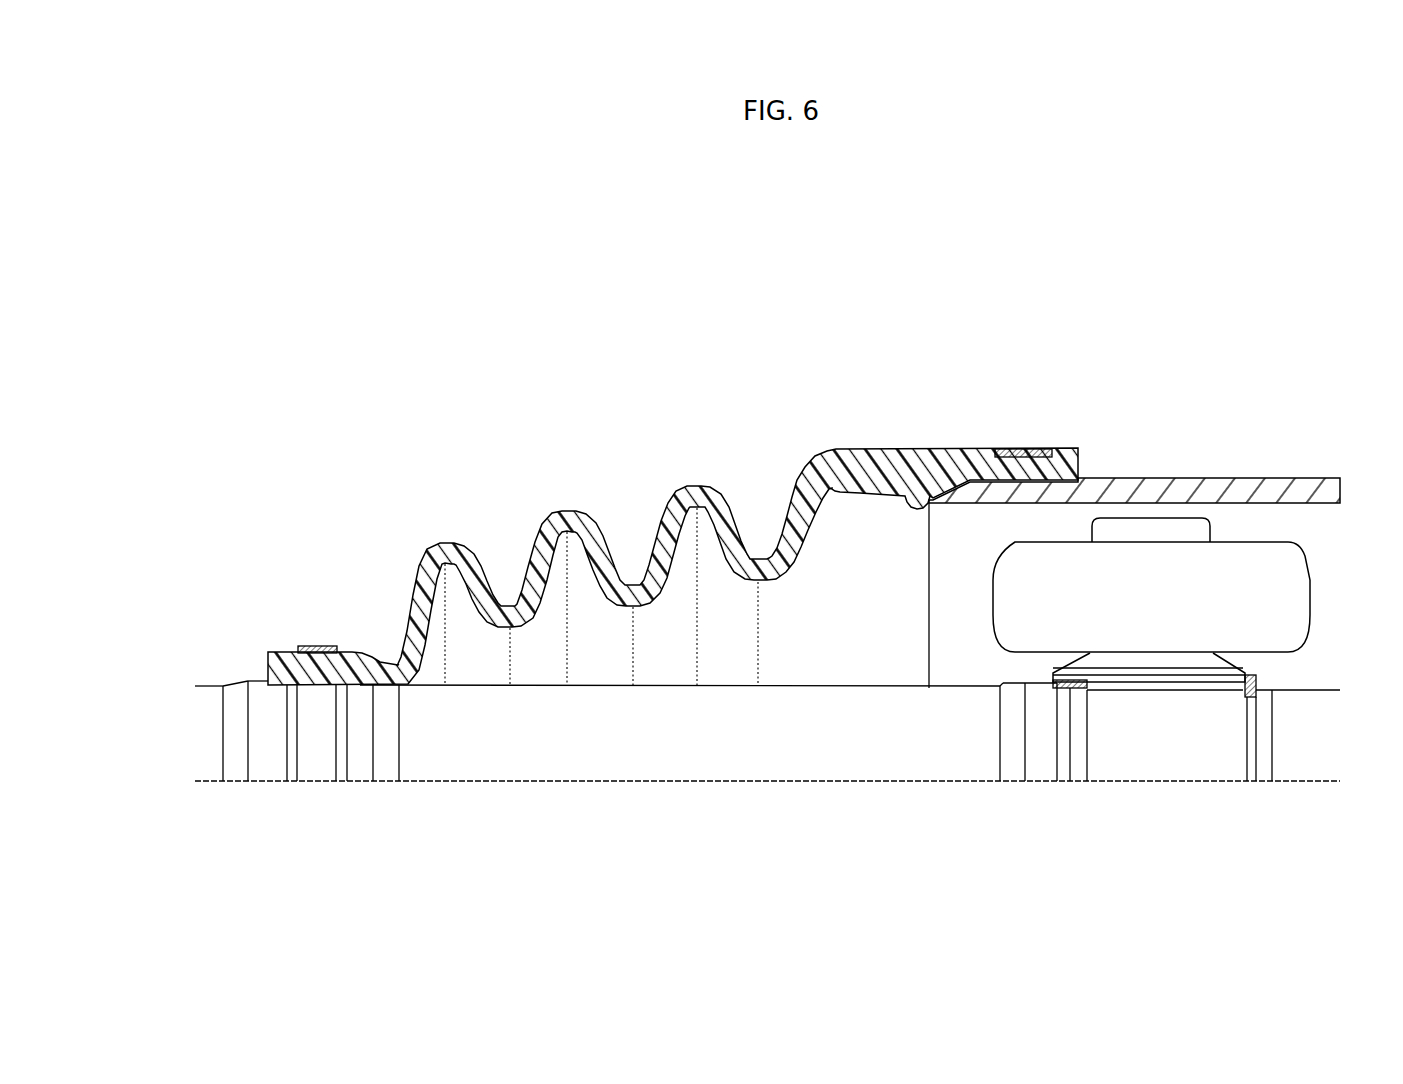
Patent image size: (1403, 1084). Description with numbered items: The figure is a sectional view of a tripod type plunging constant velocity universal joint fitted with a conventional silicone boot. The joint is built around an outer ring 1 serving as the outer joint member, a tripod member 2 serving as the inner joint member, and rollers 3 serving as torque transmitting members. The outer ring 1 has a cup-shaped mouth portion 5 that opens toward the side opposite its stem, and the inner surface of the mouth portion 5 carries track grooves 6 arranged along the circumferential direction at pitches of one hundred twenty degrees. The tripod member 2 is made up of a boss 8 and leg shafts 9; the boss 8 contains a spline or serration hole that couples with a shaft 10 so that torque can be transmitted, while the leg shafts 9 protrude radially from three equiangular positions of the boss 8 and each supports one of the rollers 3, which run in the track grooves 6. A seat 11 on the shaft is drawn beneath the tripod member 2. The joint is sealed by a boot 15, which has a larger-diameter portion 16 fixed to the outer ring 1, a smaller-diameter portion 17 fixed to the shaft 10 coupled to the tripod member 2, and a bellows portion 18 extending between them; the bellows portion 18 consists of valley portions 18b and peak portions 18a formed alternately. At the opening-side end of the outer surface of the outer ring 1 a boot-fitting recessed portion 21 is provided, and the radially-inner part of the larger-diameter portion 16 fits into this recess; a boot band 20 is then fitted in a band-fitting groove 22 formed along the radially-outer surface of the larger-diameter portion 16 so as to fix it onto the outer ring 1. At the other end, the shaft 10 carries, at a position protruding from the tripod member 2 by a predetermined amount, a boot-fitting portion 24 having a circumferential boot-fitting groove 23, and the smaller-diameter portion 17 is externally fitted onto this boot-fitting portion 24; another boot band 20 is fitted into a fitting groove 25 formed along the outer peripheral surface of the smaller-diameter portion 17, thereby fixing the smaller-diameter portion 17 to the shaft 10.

The outer ring 1 is at (1199, 462).
The tripod member 2 is at (1286, 664).
The roller 3 is at (1258, 570).
The mouth portion 5 is at (1118, 477).
The track groove 6 is at (1278, 515).
The boss 8 is at (1052, 676).
The leg shaft 9 is at (1147, 527).
The shaft 10 is at (831, 678).
The shaft bearing seat 11 is at (1142, 688).
The boot 15 is at (721, 475).
The larger-diameter portion 16 is at (1072, 452).
The smaller-diameter portion 17 is at (291, 668).
The bellows portion 18 is at (593, 501).
The peak portion 18a is at (443, 536).
The valley portion 18b is at (507, 600).
The boot band 20 is at (337, 650).
The boot-fitting recessed portion 21 is at (1040, 449).
The band-fitting groove 22 is at (1018, 449).
The boot-fitting groove 23 is at (319, 761).
The boot-fitting portion 24 is at (308, 787).
The fitting groove 25 is at (318, 647).